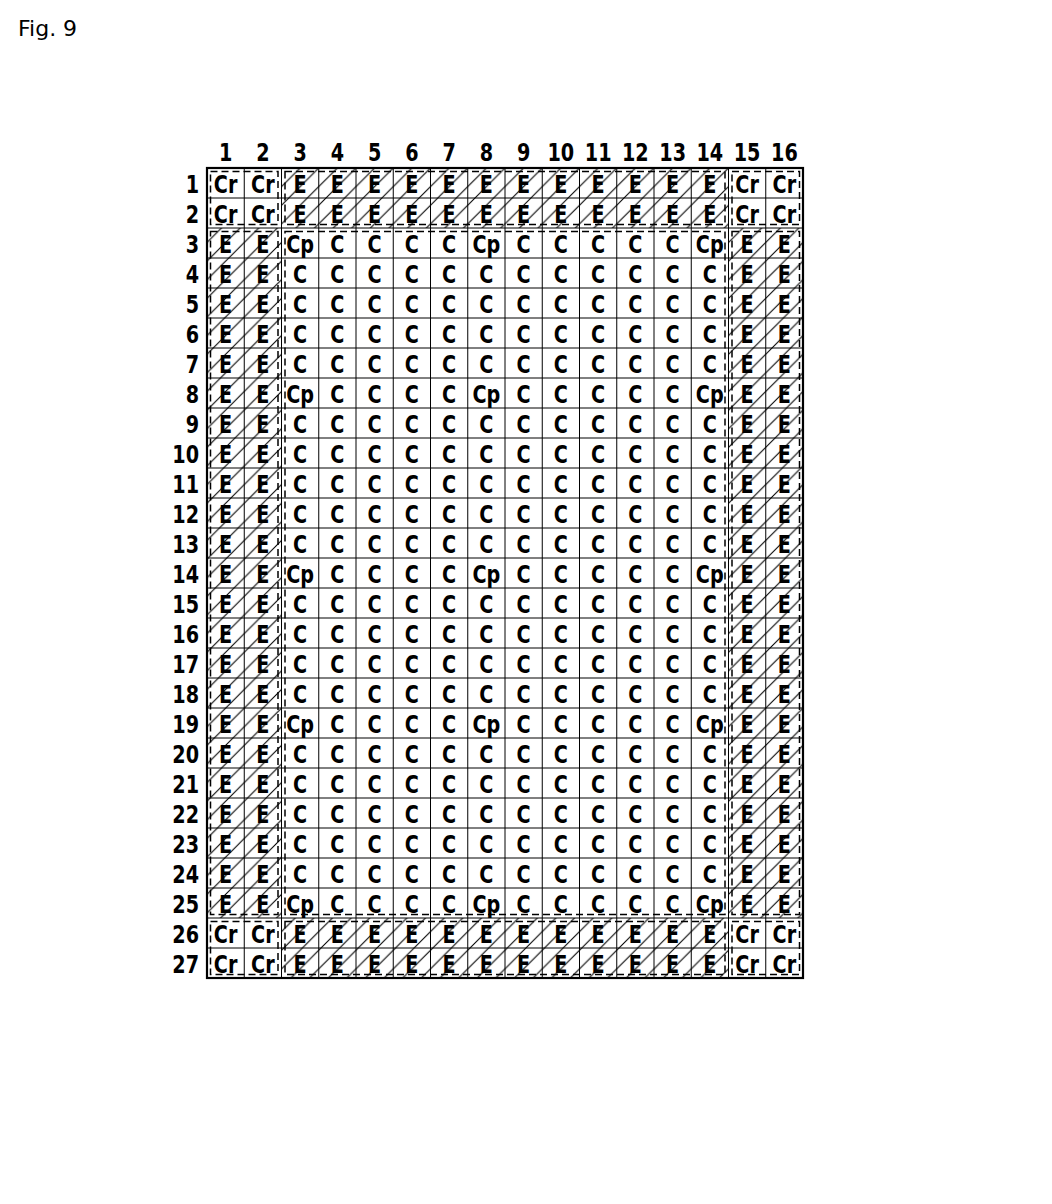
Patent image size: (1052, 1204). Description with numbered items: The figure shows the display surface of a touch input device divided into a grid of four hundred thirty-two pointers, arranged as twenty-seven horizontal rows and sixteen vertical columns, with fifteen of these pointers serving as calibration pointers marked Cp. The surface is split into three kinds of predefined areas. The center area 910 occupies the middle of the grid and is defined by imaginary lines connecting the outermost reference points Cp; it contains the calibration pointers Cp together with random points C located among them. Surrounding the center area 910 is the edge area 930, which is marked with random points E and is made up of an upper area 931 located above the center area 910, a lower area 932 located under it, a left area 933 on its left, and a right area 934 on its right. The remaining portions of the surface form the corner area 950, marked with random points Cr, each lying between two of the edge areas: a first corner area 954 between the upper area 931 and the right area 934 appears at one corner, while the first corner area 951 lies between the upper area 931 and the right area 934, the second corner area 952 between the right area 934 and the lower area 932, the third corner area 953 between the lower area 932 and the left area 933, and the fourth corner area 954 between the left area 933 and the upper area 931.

The center area 910 is at (354, 238).
The edge area 930 is at (806, 348).
The upper area 931 is at (650, 178).
The lower area 932 is at (624, 965).
The left area 933 is at (213, 549).
The right area 934 is at (796, 561).
The corner area 950 is at (807, 200).
The first corner area 951 is at (795, 181).
The second corner area 952 is at (795, 936).
The third corner area 953 is at (207, 943).
The fourth corner area 954 is at (207, 186).